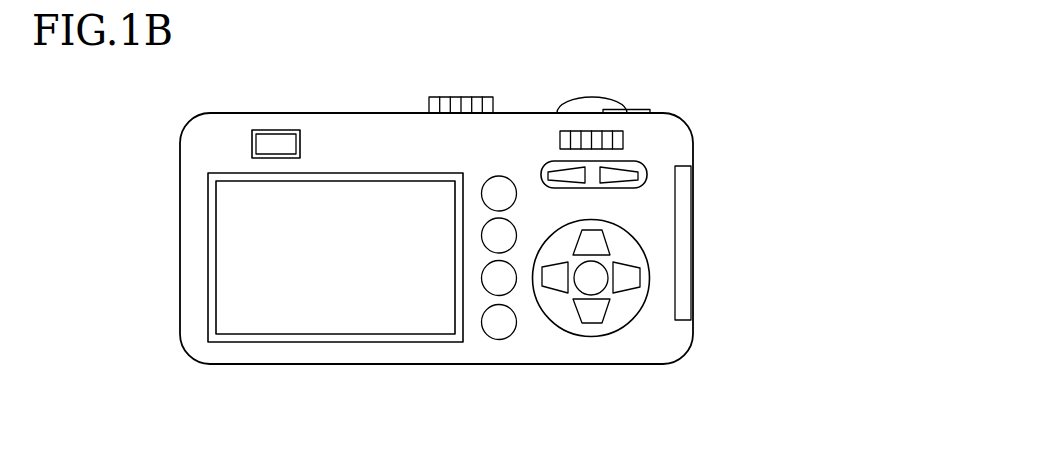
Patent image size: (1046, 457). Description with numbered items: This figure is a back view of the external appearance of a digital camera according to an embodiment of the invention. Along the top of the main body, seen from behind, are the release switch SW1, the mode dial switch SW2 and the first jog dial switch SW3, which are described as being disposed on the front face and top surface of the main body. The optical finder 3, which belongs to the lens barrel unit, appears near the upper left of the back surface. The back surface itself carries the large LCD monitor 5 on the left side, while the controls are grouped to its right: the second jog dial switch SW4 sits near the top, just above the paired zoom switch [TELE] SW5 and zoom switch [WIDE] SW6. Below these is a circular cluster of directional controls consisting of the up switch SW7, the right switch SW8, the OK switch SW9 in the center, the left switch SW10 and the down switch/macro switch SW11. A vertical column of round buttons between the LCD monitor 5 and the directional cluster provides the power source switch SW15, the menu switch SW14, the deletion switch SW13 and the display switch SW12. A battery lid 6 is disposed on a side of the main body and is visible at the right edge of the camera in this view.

The optical finder 3 is at (253, 134).
The LCD monitor 5 is at (293, 327).
The battery lid 6 is at (693, 218).
The release switch SW1 is at (628, 109).
The mode dial switch SW2 is at (457, 97).
The jog dial 1 switch SW3 is at (585, 97).
The jog dial 2 switch SW4 is at (624, 141).
The zoom switch [TELE] SW5 is at (647, 168).
The zoom switch [WIDE] SW6 is at (585, 183).
The up switch SW7 is at (607, 233).
The right switch SW8 is at (567, 288).
The OK switch SW9 is at (600, 288).
The left switch SW10 is at (612, 290).
The down switch/macro switch SW11 is at (597, 323).
The display switch SW12 is at (517, 323).
The deletion switch SW13 is at (484, 292).
The menu switch SW14 is at (482, 243).
The power source switch SW15 is at (482, 200).